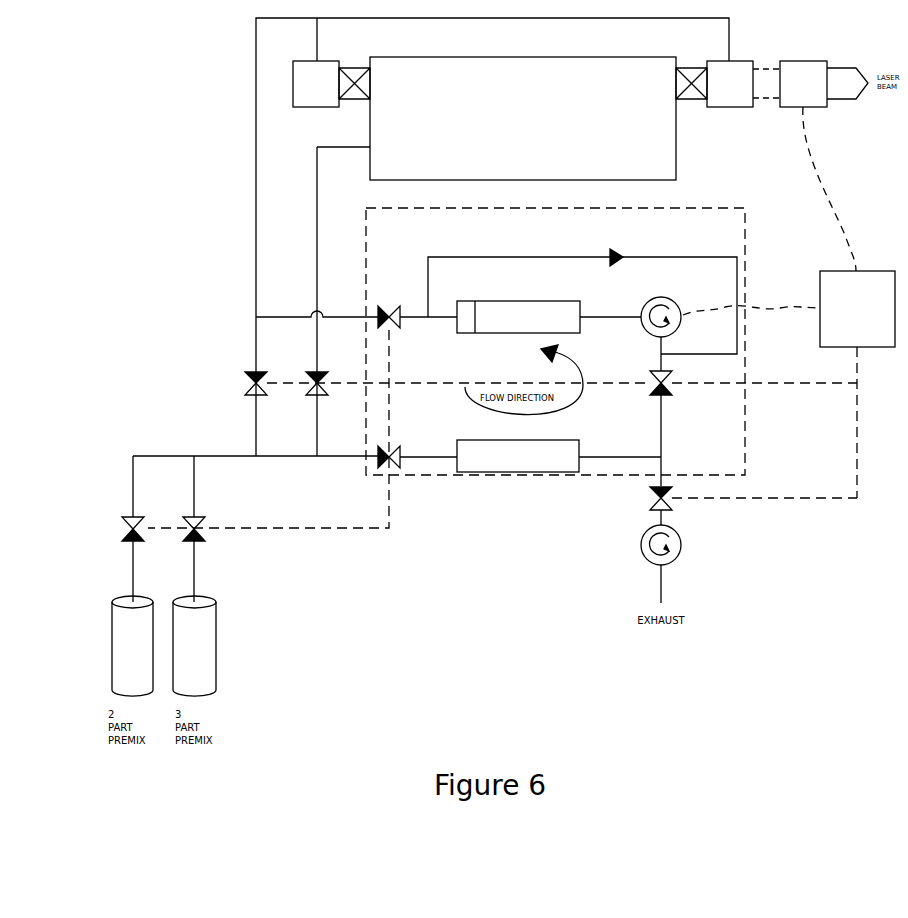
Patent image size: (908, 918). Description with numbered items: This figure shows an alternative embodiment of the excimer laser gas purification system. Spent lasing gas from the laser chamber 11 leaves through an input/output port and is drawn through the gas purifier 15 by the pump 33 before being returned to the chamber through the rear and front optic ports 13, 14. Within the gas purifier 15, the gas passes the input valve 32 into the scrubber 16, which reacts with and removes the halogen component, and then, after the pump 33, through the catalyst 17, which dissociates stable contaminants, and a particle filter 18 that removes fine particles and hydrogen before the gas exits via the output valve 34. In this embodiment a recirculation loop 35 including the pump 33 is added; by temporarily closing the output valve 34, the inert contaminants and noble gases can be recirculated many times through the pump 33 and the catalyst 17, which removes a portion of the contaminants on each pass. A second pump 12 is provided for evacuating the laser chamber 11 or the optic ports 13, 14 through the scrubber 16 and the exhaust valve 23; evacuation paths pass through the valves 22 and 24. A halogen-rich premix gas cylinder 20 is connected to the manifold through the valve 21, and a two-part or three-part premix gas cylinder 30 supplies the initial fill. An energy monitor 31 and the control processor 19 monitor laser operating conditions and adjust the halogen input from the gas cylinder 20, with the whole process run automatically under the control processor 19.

The laser chamber 11 is at (652, 106).
The second pump 12 is at (682, 550).
The rear optic port 13 is at (293, 61).
The front optic port 14 is at (707, 61).
The gas purifier 15 is at (392, 235).
The scrubber 16 is at (521, 472).
The catalyst 17 is at (513, 333).
The particle filter 18 is at (470, 301).
The control processor 19 is at (878, 295).
The halogen-rich premix gas cylinder 20 is at (203, 683).
The valve 21 is at (202, 545).
The valve 22 is at (305, 378).
The exhaust valve 23 is at (640, 510).
The valve 24 is at (240, 378).
The two-part or three-part premix gas cylinder 30 is at (140, 683).
The energy monitor 31 is at (780, 61).
The input valve 32 is at (400, 443).
The pump 33 is at (683, 318).
The output valve 34 is at (380, 307).
The recirculation loop 35 is at (737, 257).